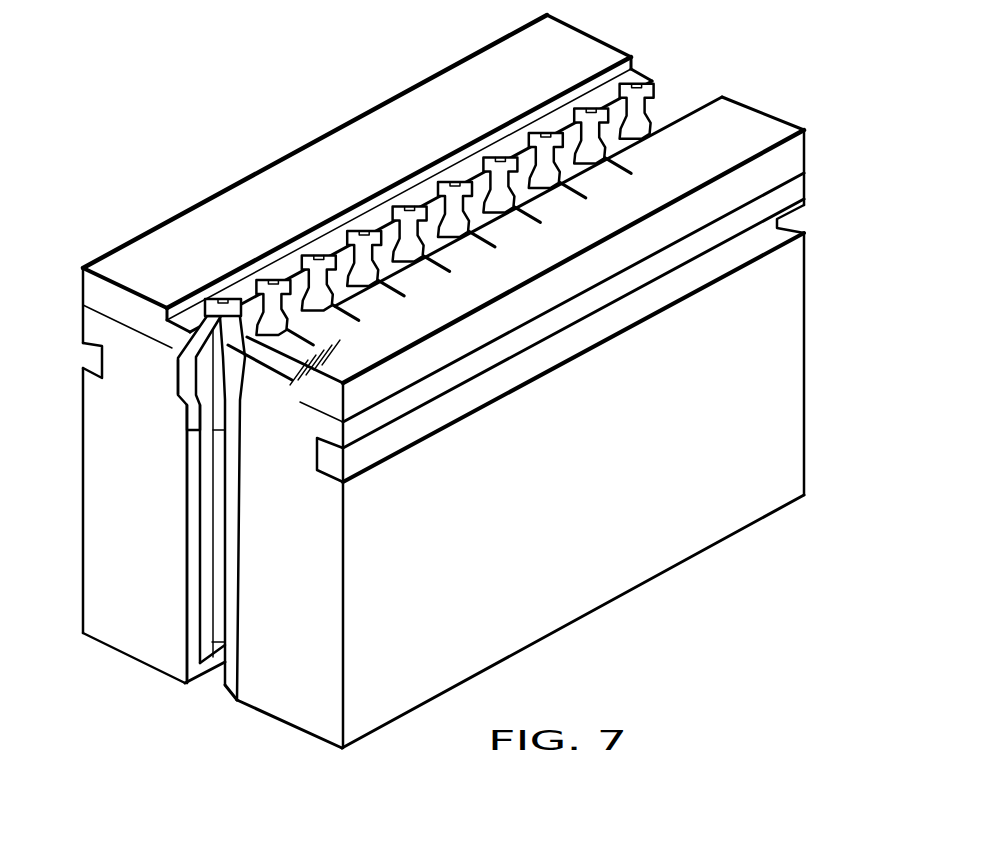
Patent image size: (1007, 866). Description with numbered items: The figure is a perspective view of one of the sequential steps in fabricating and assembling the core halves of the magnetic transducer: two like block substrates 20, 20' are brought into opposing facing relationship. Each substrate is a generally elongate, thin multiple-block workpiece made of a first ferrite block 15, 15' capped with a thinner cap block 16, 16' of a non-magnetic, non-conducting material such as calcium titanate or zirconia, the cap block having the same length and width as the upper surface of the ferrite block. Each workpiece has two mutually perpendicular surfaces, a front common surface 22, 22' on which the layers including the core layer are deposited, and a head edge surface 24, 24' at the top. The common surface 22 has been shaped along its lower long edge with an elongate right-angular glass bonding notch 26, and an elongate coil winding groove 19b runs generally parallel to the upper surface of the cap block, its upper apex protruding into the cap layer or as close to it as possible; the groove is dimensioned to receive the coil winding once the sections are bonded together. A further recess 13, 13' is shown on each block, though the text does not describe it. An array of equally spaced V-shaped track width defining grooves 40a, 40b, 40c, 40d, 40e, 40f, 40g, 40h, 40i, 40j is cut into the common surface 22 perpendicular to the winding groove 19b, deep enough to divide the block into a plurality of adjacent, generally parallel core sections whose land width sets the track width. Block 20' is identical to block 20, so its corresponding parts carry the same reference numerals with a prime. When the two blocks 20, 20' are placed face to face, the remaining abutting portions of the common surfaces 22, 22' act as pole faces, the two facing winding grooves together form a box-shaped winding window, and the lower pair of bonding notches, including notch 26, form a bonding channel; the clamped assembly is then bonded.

The block substrate 20 is at (310, 141).
The block substrate 20' is at (573, 621).
The ferrite block 15 is at (154, 475).
The ferrite block 15' is at (516, 490).
The cap block 16 is at (357, 161).
The cap block 16' is at (552, 327).
The head edge surface 24 is at (409, 194).
The head edge surface 24' is at (599, 221).
The slot 13 is at (58, 357).
The mating slot 13' is at (597, 335).
The winding groove 19b is at (177, 378).
The common surface 22 is at (177, 544).
The common surface 22' is at (248, 508).
The bonding notch 26 is at (193, 673).
The track width defining groove 40a is at (208, 297).
The track width defining groove 40b is at (256, 276).
The track width defining groove 40c is at (301, 251).
The track width defining groove 40d is at (347, 226).
The track width defining groove 40e is at (392, 202).
The track width defining groove 40f is at (438, 178).
The track width defining groove 40g is at (483, 153).
The track width defining groove 40h is at (528, 128).
The track width defining groove 40i is at (574, 103).
The track width defining groove 40j is at (632, 80).